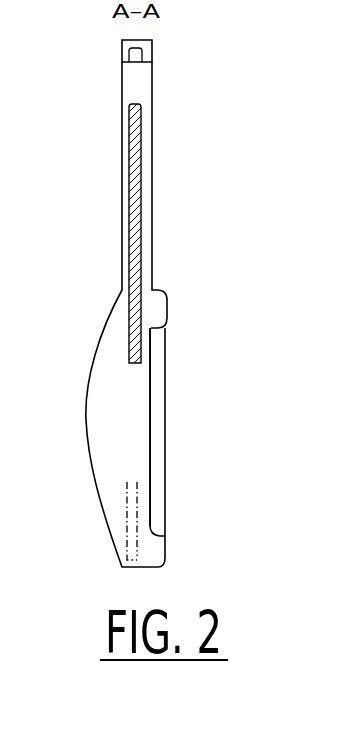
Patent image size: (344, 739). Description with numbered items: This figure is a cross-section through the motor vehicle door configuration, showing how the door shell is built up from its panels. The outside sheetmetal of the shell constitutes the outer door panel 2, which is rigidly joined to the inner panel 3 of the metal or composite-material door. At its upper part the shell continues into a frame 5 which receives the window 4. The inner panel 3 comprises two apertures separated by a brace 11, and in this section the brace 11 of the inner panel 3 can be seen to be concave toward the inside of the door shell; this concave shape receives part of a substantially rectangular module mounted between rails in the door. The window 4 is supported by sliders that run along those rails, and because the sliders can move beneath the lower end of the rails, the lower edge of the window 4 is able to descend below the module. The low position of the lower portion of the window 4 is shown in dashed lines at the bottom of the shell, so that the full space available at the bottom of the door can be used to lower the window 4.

The outer door panel 2 is at (87, 417).
The inner panel 3 is at (165, 478).
The window 4 is at (130, 196).
The frame 5 is at (152, 57).
The brace 11 is at (150, 421).